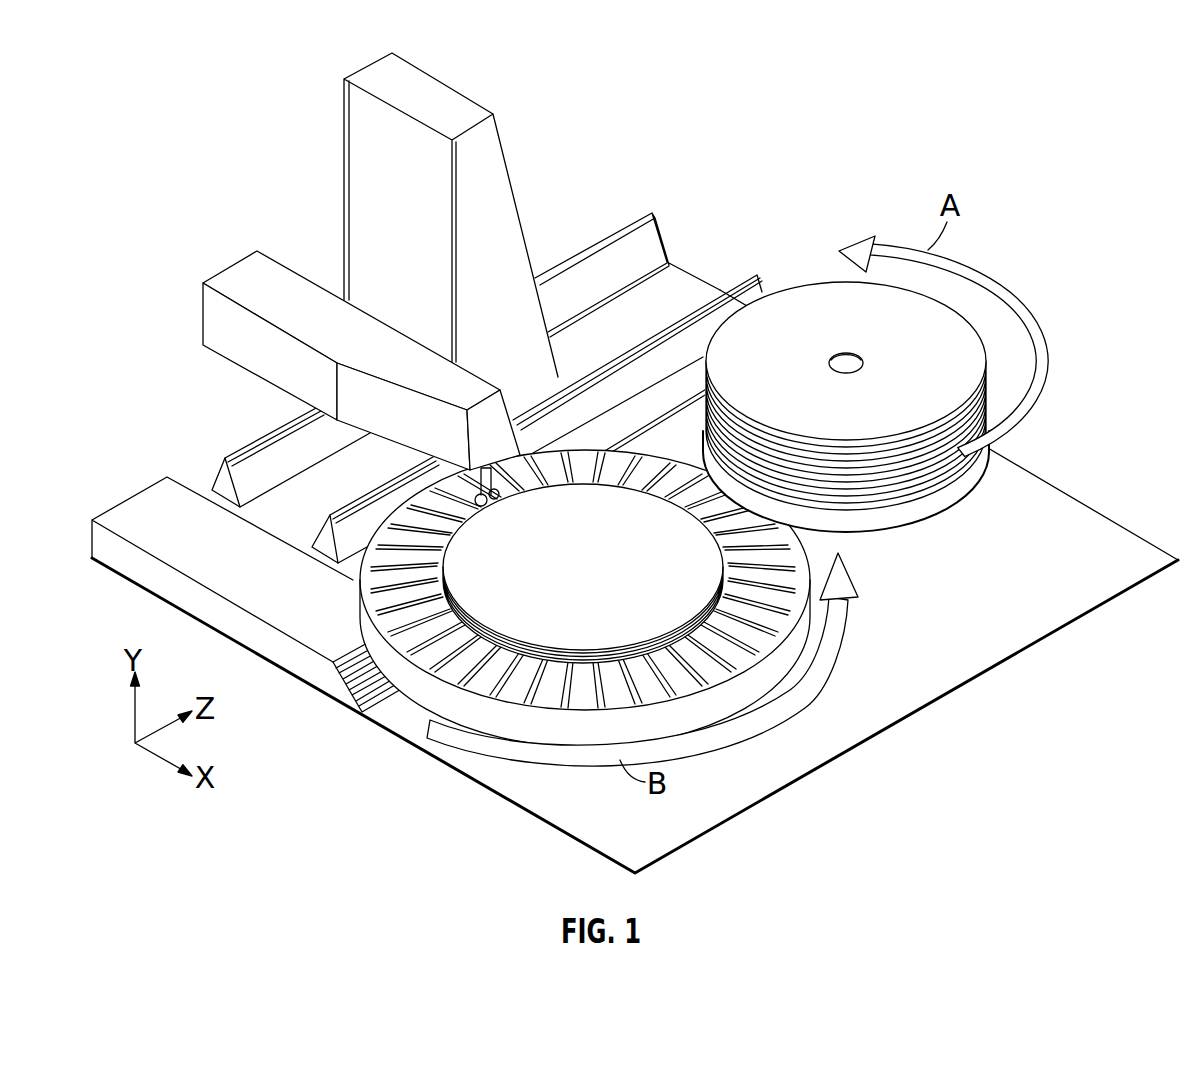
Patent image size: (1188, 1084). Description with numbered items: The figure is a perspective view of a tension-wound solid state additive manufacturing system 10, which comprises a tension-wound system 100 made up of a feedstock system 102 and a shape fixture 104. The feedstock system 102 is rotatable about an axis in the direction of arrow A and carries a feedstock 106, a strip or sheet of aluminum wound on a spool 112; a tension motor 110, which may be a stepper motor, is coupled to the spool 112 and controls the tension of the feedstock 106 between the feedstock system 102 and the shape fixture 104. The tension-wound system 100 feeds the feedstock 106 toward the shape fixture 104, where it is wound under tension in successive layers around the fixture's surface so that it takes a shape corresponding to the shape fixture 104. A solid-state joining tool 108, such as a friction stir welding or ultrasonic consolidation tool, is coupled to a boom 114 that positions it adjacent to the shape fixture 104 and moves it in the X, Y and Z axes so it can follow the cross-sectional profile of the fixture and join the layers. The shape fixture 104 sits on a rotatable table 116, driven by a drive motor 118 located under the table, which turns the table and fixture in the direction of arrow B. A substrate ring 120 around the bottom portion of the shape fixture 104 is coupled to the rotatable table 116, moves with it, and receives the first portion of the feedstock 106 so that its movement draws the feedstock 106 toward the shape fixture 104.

The tension-wound solid state additive manufacturing system 10 is at (973, 729).
The tension-wound system 100 is at (818, 152).
The feedstock system 102 is at (1050, 432).
The shape fixture 104 is at (678, 584).
The feedstock 106 is at (680, 398).
The solid-state joining tool 108 is at (360, 569).
The tension motor 110 is at (888, 541).
The spool 112 is at (822, 300).
The boom 114 is at (258, 268).
The rotatable table 116 is at (686, 685).
The drive motor 118 is at (402, 714).
The substrate ring 120 is at (559, 650).